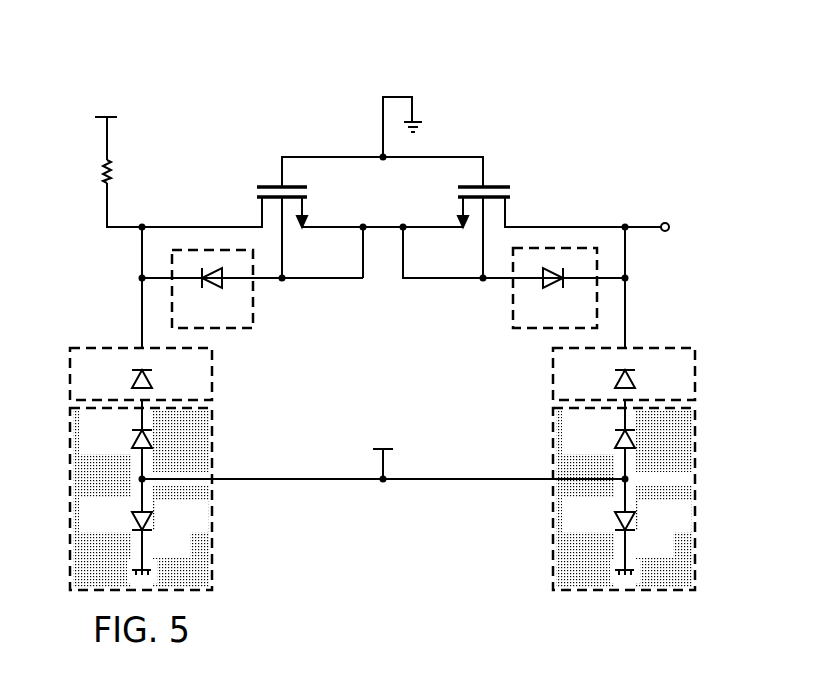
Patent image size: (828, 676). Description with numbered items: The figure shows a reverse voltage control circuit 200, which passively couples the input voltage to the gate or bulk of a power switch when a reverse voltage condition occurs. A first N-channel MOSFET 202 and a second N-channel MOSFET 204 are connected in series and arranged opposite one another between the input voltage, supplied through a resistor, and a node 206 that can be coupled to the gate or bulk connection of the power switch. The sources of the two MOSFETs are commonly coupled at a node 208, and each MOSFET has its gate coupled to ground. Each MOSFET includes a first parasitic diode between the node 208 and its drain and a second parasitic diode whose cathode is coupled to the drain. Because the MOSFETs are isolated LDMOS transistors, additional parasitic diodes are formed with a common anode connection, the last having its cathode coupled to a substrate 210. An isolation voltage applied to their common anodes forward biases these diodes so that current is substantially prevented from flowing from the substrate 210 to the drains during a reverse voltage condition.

The reverse voltage control circuit 200 is at (487, 104).
The first N-channel MOSFET 202 is at (273, 186).
The second N-channel MOSFET 204 is at (493, 186).
The node 206 is at (654, 206).
The node 208 is at (384, 265).
The substrate 210 is at (155, 551).